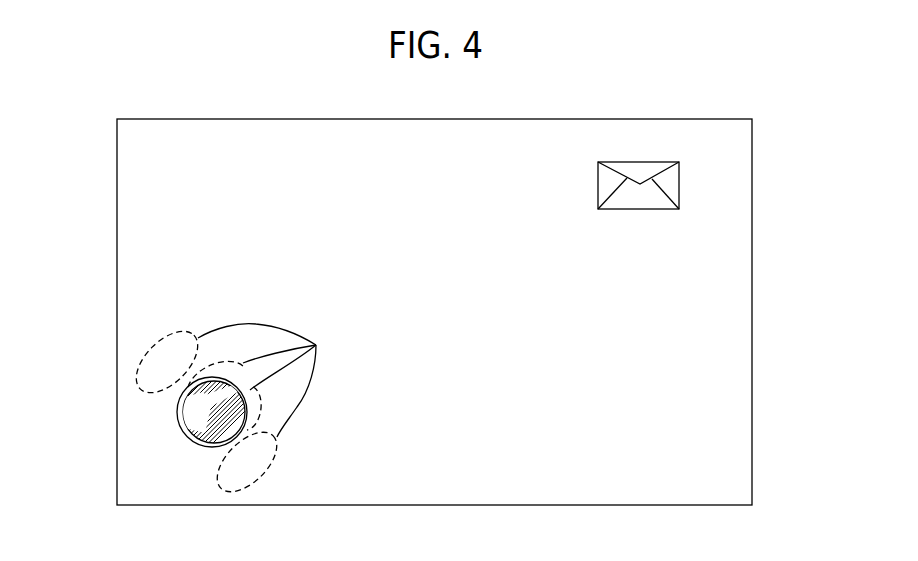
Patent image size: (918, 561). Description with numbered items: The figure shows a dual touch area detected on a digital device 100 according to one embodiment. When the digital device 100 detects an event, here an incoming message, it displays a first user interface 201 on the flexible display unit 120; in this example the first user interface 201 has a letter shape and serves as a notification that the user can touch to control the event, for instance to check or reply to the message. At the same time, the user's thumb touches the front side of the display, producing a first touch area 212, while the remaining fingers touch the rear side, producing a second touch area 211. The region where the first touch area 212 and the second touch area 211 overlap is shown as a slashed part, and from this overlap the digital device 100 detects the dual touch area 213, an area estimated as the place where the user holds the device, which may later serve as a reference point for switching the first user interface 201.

The digital device 100 is at (117, 209).
The flexible display unit 120 is at (733, 394).
The first user interface 201 is at (680, 183).
The second touch area 211 is at (235, 411).
The first touch area 212 is at (180, 432).
The dual touch area 213 is at (180, 410).